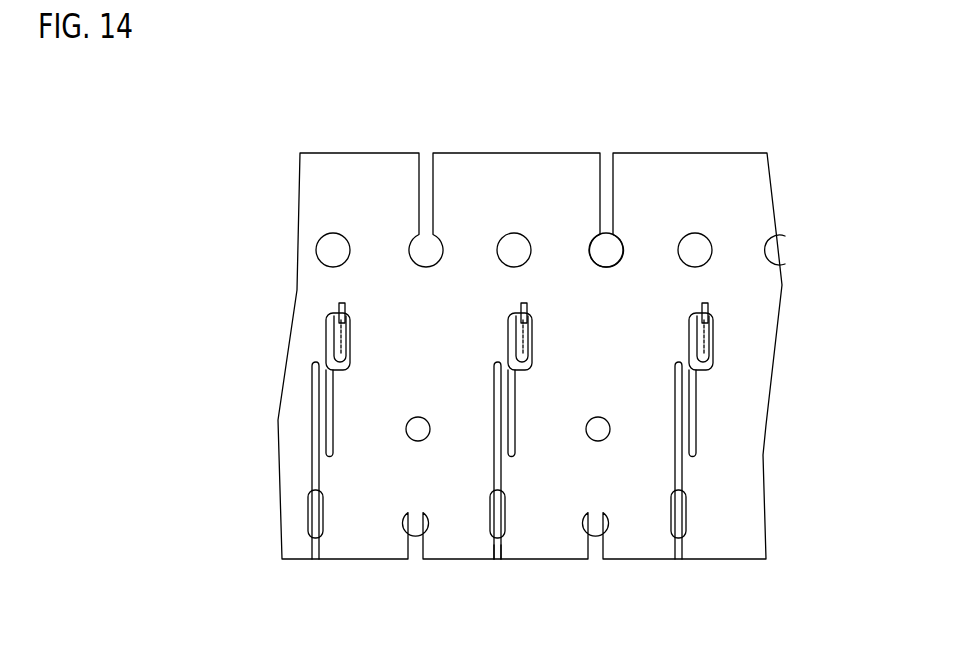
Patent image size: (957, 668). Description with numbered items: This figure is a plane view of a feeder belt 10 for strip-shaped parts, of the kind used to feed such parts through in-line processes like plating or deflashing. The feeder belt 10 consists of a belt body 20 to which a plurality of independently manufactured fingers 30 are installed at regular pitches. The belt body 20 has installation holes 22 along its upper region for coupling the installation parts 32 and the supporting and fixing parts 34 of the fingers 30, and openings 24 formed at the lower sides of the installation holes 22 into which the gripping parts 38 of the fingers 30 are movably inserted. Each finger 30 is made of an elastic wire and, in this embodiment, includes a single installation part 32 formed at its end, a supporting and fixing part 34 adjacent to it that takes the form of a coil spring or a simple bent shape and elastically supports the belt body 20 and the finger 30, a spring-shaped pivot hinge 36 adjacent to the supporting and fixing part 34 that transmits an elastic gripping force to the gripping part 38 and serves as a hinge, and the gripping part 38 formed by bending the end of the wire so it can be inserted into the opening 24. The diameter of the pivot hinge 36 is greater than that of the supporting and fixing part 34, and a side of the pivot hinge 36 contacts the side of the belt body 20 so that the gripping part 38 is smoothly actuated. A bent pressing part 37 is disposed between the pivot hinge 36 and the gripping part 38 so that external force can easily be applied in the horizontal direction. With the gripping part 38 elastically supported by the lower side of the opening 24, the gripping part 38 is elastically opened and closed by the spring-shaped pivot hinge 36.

The feeder belt 10 is at (325, 120).
The belt body 20 is at (518, 158).
The installation hole 22 is at (692, 365).
The opening 24 is at (500, 520).
The finger 30 is at (485, 370).
The installation part 32 is at (341, 302).
The supporting and fixing part 34 is at (327, 337).
The pivot hinge 36 is at (318, 417).
The bent pressing part 37 is at (308, 512).
The gripping part 38 is at (317, 545).